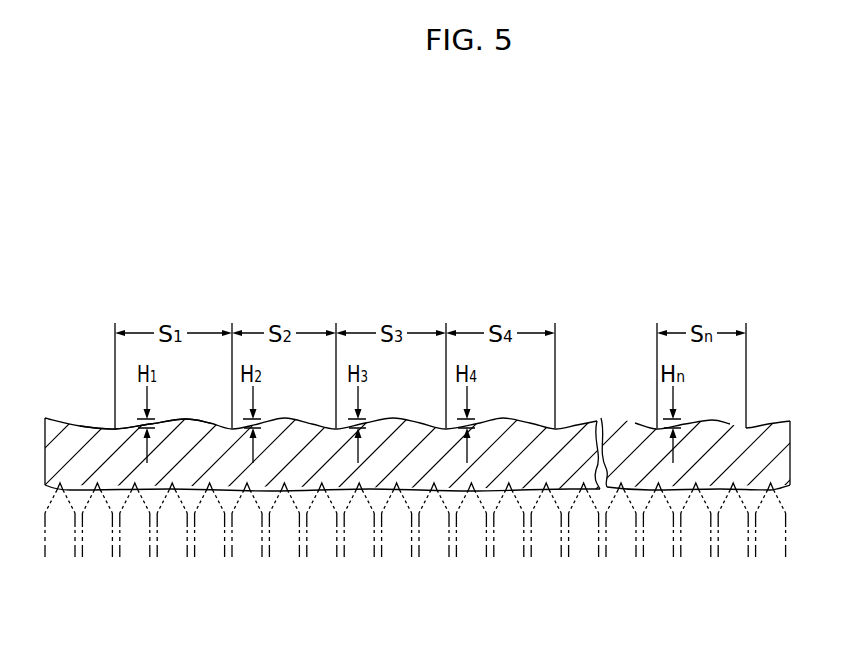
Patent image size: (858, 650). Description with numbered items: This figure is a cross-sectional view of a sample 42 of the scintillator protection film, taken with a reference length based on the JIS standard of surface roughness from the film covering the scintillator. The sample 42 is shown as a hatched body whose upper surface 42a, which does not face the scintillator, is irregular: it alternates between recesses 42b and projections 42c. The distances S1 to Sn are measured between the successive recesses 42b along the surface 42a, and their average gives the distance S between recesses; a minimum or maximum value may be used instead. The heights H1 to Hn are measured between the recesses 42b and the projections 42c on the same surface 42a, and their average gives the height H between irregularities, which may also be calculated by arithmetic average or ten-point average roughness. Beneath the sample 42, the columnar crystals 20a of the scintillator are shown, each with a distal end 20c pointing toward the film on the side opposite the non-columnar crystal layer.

The sample 42 is at (776, 388).
The surface 42a is at (786, 419).
The recesses 42b is at (112, 428).
The projections 42c is at (177, 420).
The columnar crystals 20a is at (713, 554).
The distal end 20c is at (776, 497).